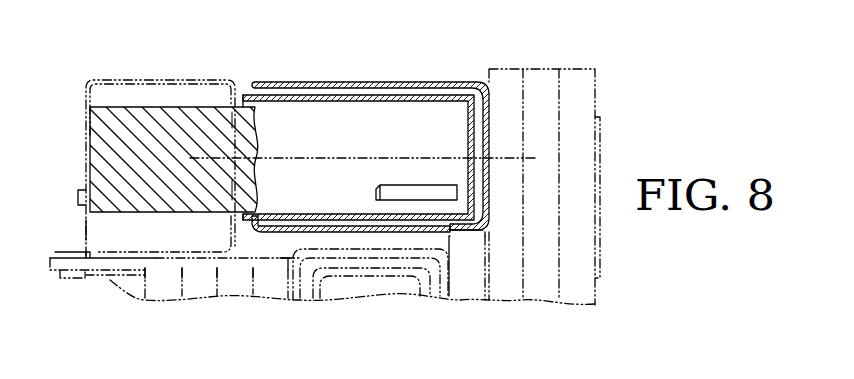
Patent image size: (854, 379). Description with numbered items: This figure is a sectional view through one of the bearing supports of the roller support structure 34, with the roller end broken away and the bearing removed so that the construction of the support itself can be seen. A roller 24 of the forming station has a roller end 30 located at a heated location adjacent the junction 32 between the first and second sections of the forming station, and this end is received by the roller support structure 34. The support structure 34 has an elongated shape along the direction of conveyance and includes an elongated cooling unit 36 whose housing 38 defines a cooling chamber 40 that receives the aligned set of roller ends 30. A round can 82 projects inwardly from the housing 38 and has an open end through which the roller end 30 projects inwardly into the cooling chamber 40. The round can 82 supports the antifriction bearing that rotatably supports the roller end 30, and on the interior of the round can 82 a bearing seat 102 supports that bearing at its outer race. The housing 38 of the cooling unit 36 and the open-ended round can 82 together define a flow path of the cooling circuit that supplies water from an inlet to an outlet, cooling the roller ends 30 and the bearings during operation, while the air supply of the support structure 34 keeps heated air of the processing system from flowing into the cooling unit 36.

The roller 24 is at (116, 101).
The roller end 30 is at (174, 114).
The junction 32 is at (552, 55).
The roller support structure 34 is at (366, 157).
The cooling unit 36 is at (332, 81).
The housing 38 is at (431, 80).
The cooling chamber 40 is at (320, 92).
The round can 82 is at (304, 98).
The bearing seat 102 is at (418, 188).